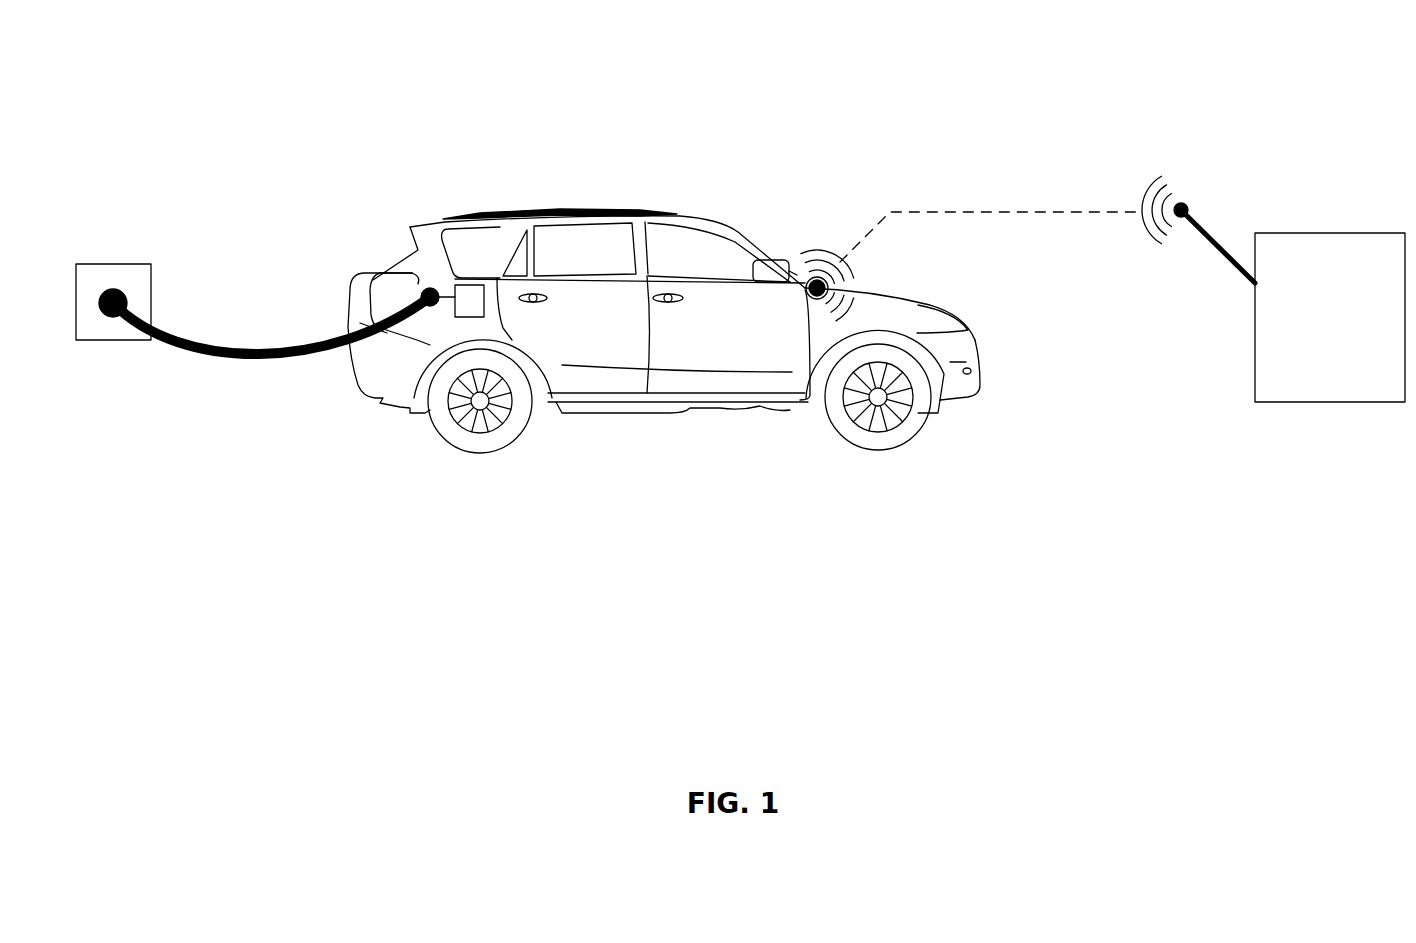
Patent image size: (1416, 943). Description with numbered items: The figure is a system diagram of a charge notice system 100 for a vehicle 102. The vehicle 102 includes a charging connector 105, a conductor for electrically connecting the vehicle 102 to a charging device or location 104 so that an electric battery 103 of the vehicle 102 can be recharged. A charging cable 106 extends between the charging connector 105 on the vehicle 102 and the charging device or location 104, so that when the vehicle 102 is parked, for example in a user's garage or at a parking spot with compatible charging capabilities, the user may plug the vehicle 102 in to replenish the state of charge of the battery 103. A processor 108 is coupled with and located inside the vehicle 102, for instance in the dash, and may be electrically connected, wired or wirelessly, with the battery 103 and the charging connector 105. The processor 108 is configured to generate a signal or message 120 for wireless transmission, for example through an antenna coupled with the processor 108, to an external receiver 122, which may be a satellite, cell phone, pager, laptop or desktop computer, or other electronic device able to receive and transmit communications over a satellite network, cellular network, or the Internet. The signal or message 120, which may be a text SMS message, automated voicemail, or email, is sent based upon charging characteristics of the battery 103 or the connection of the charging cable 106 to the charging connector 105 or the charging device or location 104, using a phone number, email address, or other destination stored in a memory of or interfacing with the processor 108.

The charge notice system 100 is at (1304, 78).
The vehicle 102 is at (551, 219).
The electric battery 103 is at (458, 285).
The charging device or location 104 is at (110, 264).
The charging connector 105 is at (424, 294).
The charging cable 106 is at (261, 362).
The processor 108 is at (810, 281).
The signal or message 120 is at (1025, 211).
The external receiver 122 is at (1327, 233).